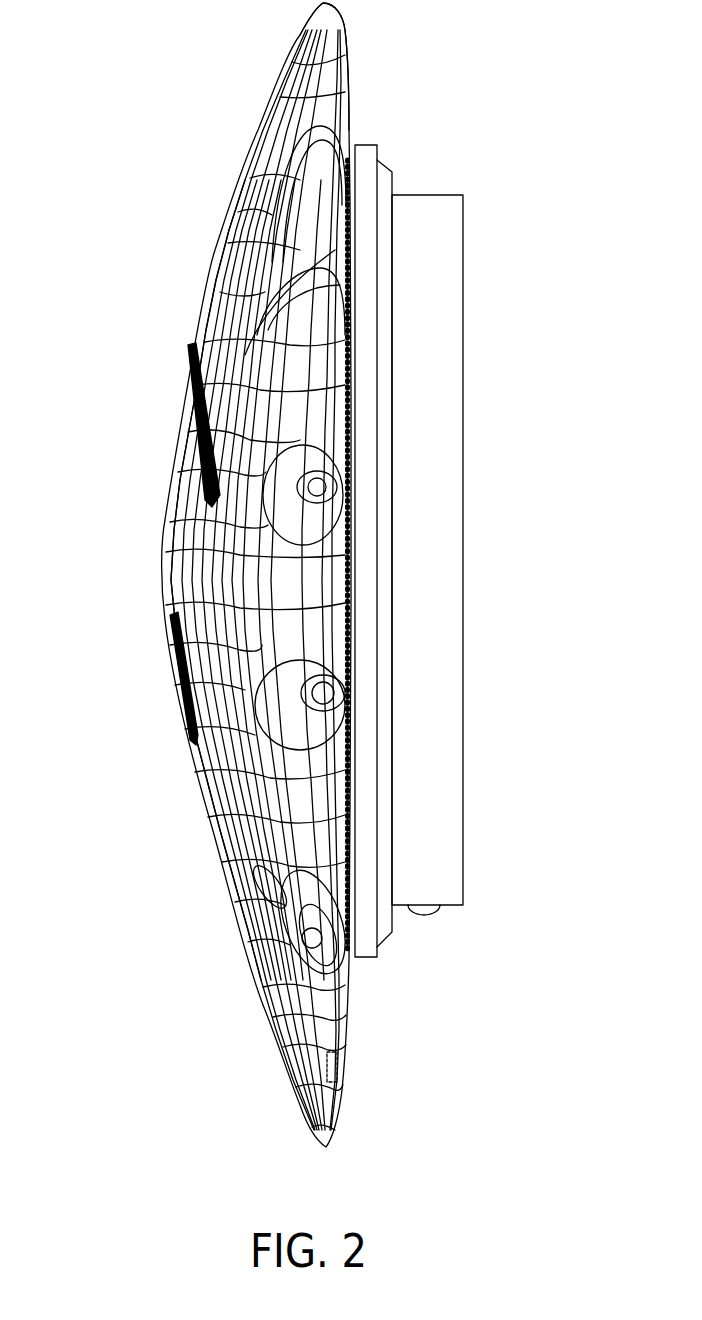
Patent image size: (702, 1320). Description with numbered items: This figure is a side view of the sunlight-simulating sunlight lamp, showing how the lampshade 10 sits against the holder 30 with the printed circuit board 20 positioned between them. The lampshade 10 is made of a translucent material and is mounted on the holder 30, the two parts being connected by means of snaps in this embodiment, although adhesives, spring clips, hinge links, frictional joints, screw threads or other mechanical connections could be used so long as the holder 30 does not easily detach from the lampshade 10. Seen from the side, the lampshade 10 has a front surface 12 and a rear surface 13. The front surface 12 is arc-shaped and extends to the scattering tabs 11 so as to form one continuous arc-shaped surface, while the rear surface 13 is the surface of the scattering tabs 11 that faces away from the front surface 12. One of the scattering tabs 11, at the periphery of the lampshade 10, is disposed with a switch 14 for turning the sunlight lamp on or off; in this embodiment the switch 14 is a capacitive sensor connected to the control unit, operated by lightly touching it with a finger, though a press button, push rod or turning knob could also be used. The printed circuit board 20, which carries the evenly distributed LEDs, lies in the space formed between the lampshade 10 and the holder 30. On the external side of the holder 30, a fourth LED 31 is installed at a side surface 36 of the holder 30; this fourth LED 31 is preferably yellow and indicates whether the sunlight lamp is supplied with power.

The lampshade 10 is at (230, 230).
The scattering tabs 11 is at (257, 140).
The front surface 12 is at (163, 578).
The rear surface 13 is at (347, 80).
The switch 14 is at (343, 1065).
The printed circuit board 20 is at (367, 153).
The holder 30 is at (465, 345).
The fourth LED 31 is at (433, 910).
The side surface 36 is at (402, 903).